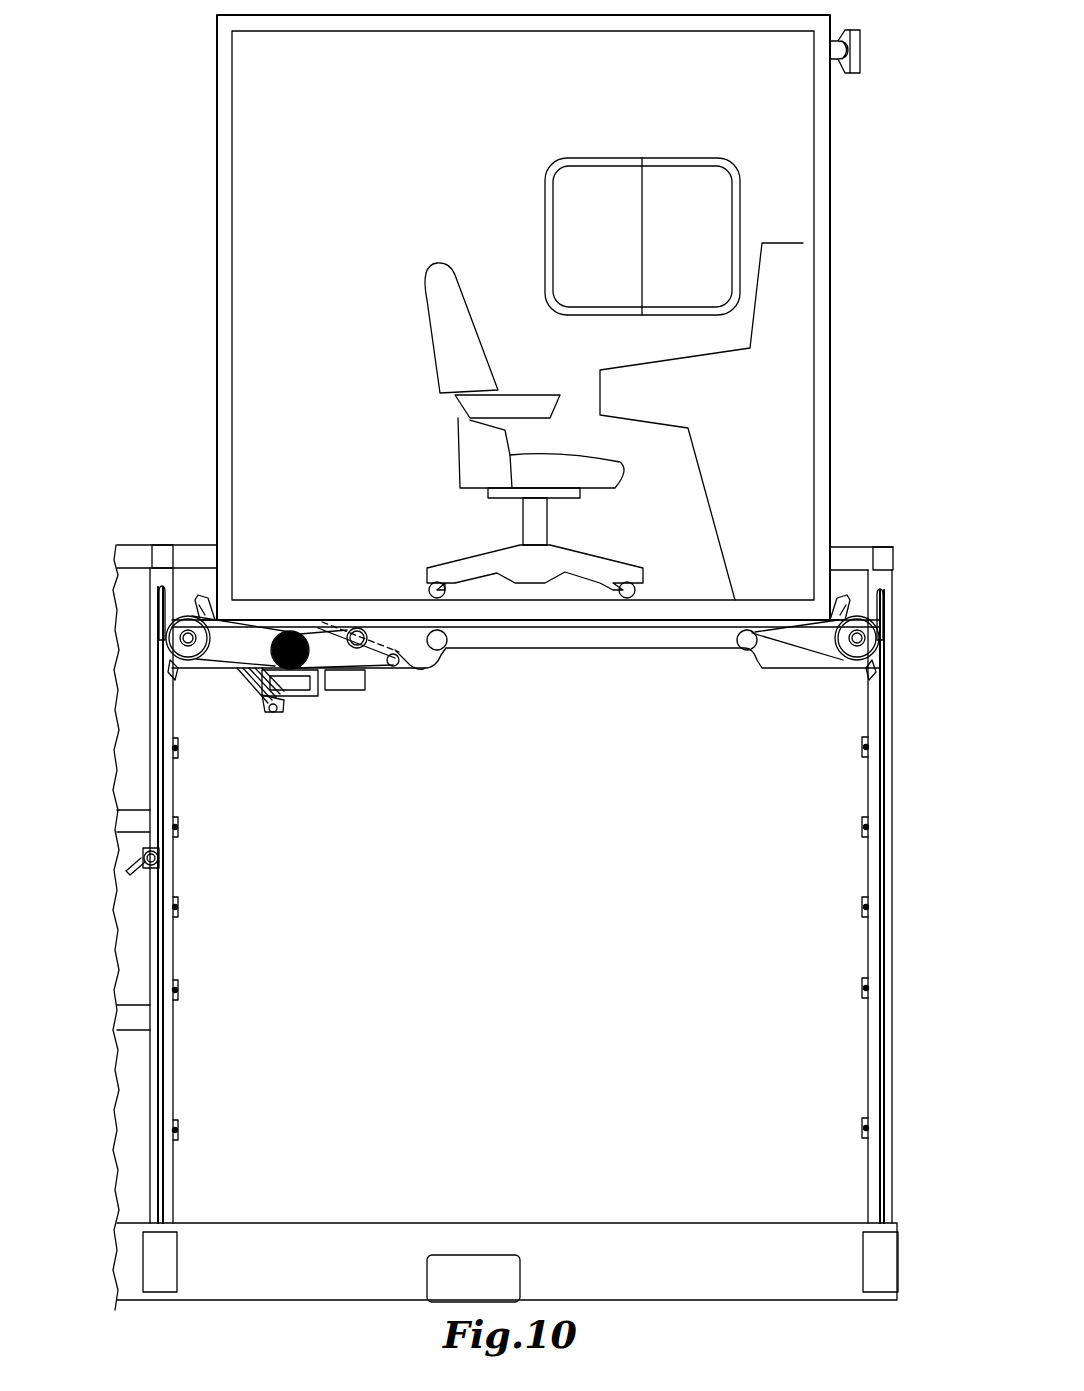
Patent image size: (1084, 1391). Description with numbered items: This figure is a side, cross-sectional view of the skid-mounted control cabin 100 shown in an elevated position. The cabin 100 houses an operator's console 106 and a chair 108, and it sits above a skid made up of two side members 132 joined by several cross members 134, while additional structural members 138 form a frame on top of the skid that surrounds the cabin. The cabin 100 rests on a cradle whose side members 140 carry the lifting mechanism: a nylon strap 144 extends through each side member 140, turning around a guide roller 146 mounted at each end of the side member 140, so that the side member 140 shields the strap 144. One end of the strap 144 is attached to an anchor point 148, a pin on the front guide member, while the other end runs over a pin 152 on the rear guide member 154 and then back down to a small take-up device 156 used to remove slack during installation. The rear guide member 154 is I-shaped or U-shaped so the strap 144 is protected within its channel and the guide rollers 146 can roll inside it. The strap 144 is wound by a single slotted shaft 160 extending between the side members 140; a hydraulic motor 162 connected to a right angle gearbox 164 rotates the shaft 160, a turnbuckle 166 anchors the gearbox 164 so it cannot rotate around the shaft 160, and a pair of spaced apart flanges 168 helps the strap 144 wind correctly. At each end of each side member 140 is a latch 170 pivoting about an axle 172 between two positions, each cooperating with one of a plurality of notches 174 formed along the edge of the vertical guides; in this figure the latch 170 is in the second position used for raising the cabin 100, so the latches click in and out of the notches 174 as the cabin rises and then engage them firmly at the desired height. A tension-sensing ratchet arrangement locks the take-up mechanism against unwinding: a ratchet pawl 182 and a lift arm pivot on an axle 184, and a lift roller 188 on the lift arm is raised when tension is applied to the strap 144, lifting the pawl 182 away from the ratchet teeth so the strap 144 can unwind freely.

The control cabin 100 is at (832, 228).
The operator's console 106 is at (749, 416).
The chair 108 is at (455, 436).
The side member 132 is at (705, 1240).
The cross member 134 is at (150, 1265).
The structural member 138 is at (205, 552).
The side member of the cradle 140 is at (785, 665).
The strap 144 is at (595, 648).
The guide roller 146 is at (190, 655).
The anchor point 148 is at (888, 596).
The pin 152 is at (158, 590).
The rear guide member 154 is at (148, 1000).
The take-up device 156 is at (143, 856).
The shaft 160 is at (293, 632).
The hydraulic motor 162 is at (345, 690).
The right angle gearbox 164 is at (300, 696).
The turnbuckle 166 is at (255, 692).
The flange 168 is at (277, 634).
The latch 170 is at (195, 600).
The axle 172 is at (188, 638).
The notch 174 is at (172, 660).
The ratchet pawl 182 is at (330, 625).
The axle 184 is at (405, 662).
The lift roller 188 is at (355, 645).